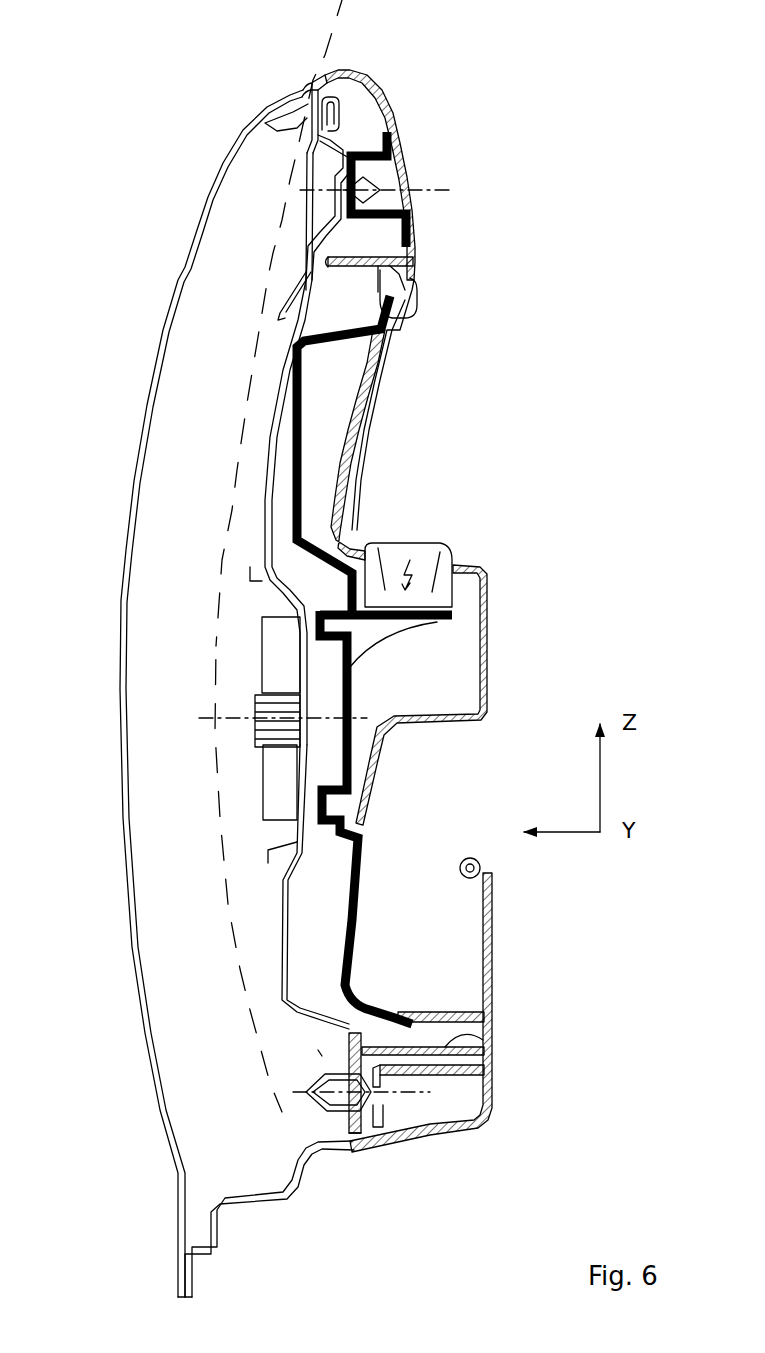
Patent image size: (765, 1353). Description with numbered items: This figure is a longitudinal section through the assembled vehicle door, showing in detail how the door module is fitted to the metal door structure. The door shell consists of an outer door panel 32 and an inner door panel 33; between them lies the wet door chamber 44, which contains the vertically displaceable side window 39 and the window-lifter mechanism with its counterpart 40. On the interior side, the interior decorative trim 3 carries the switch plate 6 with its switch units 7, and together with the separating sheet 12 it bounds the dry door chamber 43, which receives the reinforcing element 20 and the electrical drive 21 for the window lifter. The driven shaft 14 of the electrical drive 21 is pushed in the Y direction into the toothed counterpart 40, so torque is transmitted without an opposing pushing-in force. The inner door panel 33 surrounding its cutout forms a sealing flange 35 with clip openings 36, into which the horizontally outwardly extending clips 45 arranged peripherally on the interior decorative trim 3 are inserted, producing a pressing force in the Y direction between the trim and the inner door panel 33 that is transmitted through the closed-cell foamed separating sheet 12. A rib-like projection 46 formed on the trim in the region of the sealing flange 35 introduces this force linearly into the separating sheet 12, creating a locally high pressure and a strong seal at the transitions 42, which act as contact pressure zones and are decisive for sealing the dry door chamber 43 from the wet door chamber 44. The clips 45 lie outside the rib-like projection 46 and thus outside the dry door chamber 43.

The interior decorative trim 3 is at (490, 640).
The switch plate 6 is at (365, 535).
The switch units 7 is at (428, 548).
The separating sheet 12 is at (266, 472).
The driven shaft 14 is at (255, 725).
The reinforcing element 20 is at (298, 410).
The electrical drive 21 is at (326, 750).
The outer door panel 32 is at (165, 1122).
The inner door panel 33 is at (335, 1060).
The sealing flange 35 is at (356, 1032).
The clip openings 36 is at (334, 1112).
The side window 39 is at (231, 962).
The counterpart 40 is at (257, 691).
The transitions 42 is at (305, 247).
The dry door chamber 43 is at (331, 909).
The wet door chamber 44 is at (201, 918).
The clips 45 is at (395, 1100).
The rib-like projection 46 is at (393, 324).